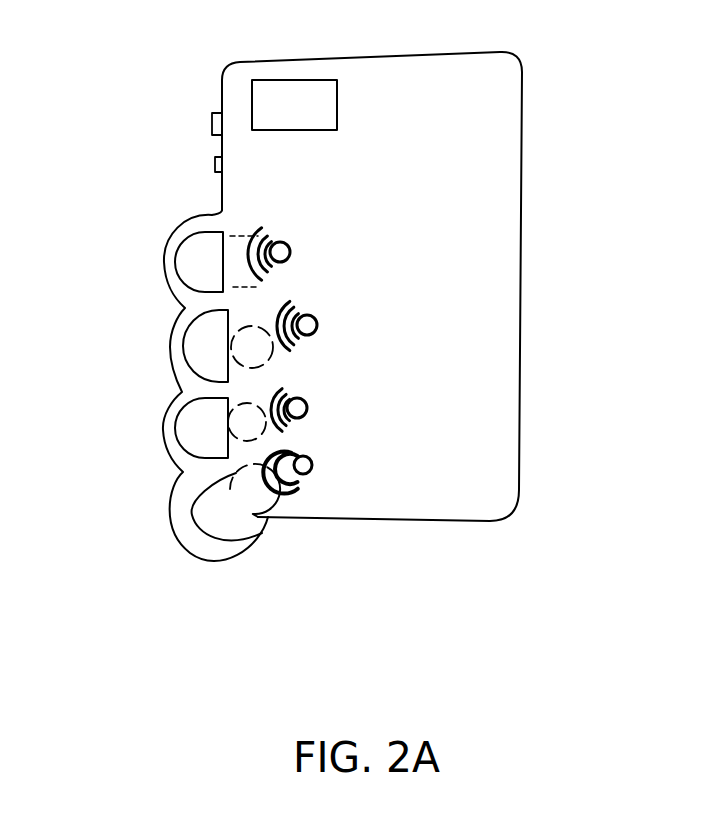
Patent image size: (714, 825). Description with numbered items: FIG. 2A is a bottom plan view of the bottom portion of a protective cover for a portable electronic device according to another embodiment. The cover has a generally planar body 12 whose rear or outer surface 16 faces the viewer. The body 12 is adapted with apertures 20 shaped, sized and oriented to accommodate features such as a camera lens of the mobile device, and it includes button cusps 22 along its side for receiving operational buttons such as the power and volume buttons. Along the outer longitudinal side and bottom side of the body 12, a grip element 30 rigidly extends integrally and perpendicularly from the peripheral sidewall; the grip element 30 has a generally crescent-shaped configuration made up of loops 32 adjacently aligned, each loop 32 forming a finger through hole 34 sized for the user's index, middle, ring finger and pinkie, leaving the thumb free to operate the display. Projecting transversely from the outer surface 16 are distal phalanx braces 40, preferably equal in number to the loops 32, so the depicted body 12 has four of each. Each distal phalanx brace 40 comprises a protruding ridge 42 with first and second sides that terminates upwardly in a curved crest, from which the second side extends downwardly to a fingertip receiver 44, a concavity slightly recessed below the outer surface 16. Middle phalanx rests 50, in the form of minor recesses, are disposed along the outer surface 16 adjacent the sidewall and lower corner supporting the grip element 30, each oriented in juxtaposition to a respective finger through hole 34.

The body 12 is at (523, 185).
The outer surface 16 is at (410, 336).
The apertures 20 is at (292, 98).
The button cusps 22 is at (217, 168).
The grip element 30 is at (146, 391).
The loop 32 is at (182, 525).
The finger through hole 34 is at (200, 343).
The distal phalanx brace 40 is at (259, 226).
The protruding ridge 42 is at (262, 246).
The fingertip receiver 44 is at (291, 254).
The middle phalanx rest 50 is at (232, 349).